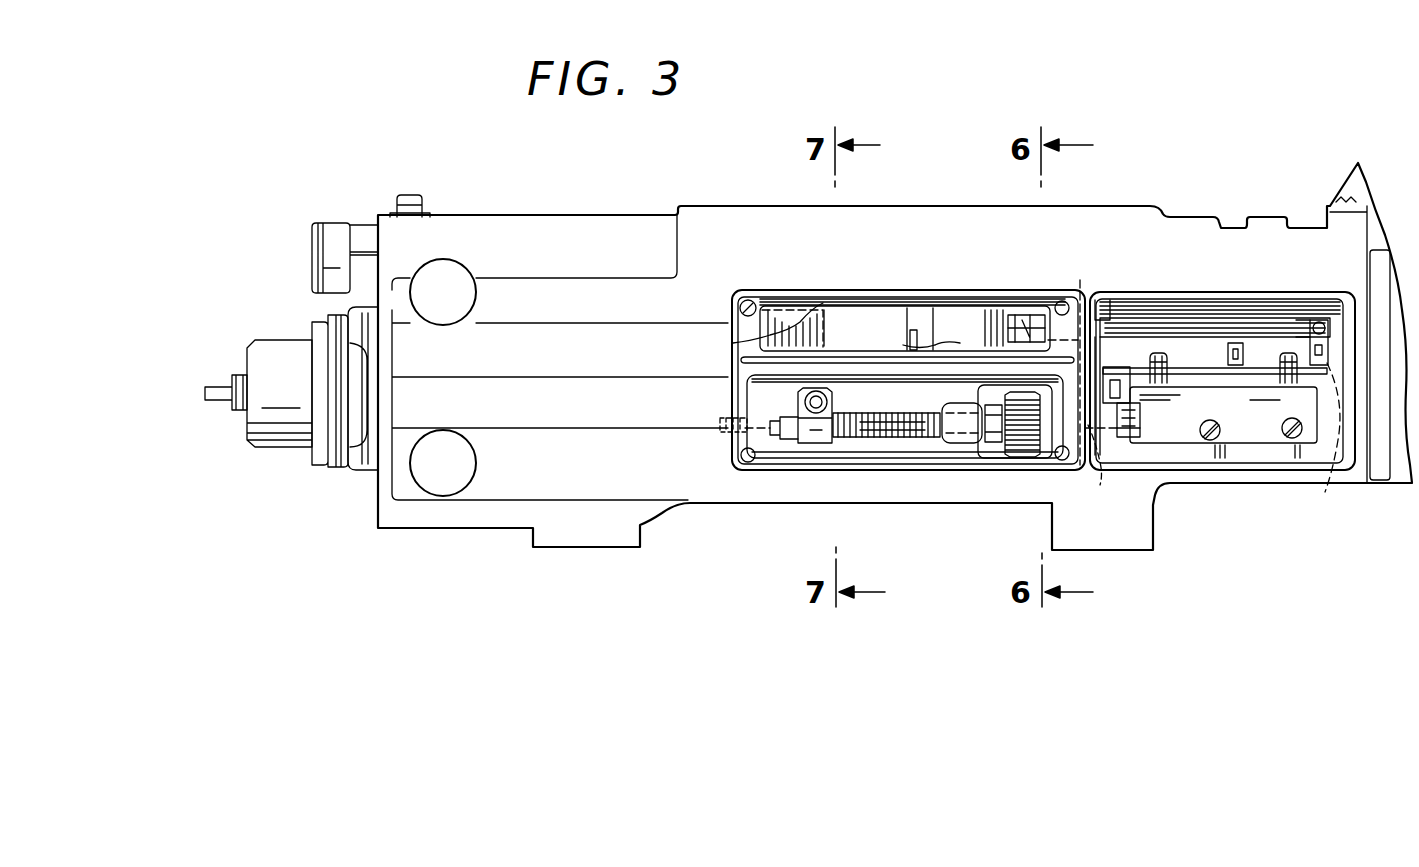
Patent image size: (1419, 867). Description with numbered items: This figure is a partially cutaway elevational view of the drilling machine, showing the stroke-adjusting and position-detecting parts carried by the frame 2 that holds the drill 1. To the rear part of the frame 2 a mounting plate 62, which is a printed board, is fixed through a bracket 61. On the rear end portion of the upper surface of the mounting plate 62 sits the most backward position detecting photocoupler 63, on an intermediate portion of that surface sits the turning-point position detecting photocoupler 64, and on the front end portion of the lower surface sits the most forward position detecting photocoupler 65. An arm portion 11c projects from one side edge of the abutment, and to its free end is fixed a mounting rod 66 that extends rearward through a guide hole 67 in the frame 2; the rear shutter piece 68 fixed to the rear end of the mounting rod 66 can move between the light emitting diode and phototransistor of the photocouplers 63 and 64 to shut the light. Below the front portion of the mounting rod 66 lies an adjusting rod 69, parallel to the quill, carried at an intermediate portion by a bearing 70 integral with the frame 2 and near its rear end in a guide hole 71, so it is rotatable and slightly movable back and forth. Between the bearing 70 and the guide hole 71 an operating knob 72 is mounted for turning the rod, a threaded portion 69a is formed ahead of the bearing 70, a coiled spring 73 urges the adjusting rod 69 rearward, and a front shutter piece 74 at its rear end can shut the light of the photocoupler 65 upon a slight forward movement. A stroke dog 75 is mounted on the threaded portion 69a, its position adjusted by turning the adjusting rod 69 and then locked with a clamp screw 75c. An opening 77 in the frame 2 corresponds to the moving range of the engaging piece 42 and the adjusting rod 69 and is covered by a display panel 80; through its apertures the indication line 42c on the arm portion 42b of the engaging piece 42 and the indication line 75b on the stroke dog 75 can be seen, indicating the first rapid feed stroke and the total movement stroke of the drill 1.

The drill 1 is at (218, 392).
The frame 2 is at (1113, 215).
The display panel 80 is at (783, 315).
The engaging piece 42 is at (920, 315).
The arm portion 42b is at (935, 345).
The indication line 42c is at (903, 345).
The arm portion 11c is at (1032, 320).
The guide hole 67 is at (1082, 310).
The mounting rod 66 is at (1120, 325).
The front shutter piece 74 is at (1125, 385).
The turning-point position detecting photocoupler 64 is at (1238, 345).
The most backward position detecting photocoupler 63 is at (1310, 350).
The mounting plate 62 is at (1205, 372).
The bracket 61 is at (1260, 437).
The most forward position detecting photocoupler 65 is at (1133, 421).
The rear shutter piece 68 is at (1224, 405).
The guide hole 71 is at (1112, 467).
The operating knob 72 is at (1030, 452).
The bearing 70 is at (983, 472).
The adjusting rod 69 is at (925, 443).
The threaded portion 69a is at (888, 437).
The coiled spring 73 is at (728, 434).
The stroke dog 75 is at (810, 445).
The indication line 75b is at (798, 397).
The clamp screw 75c is at (818, 407).
The opening 77 is at (880, 447).